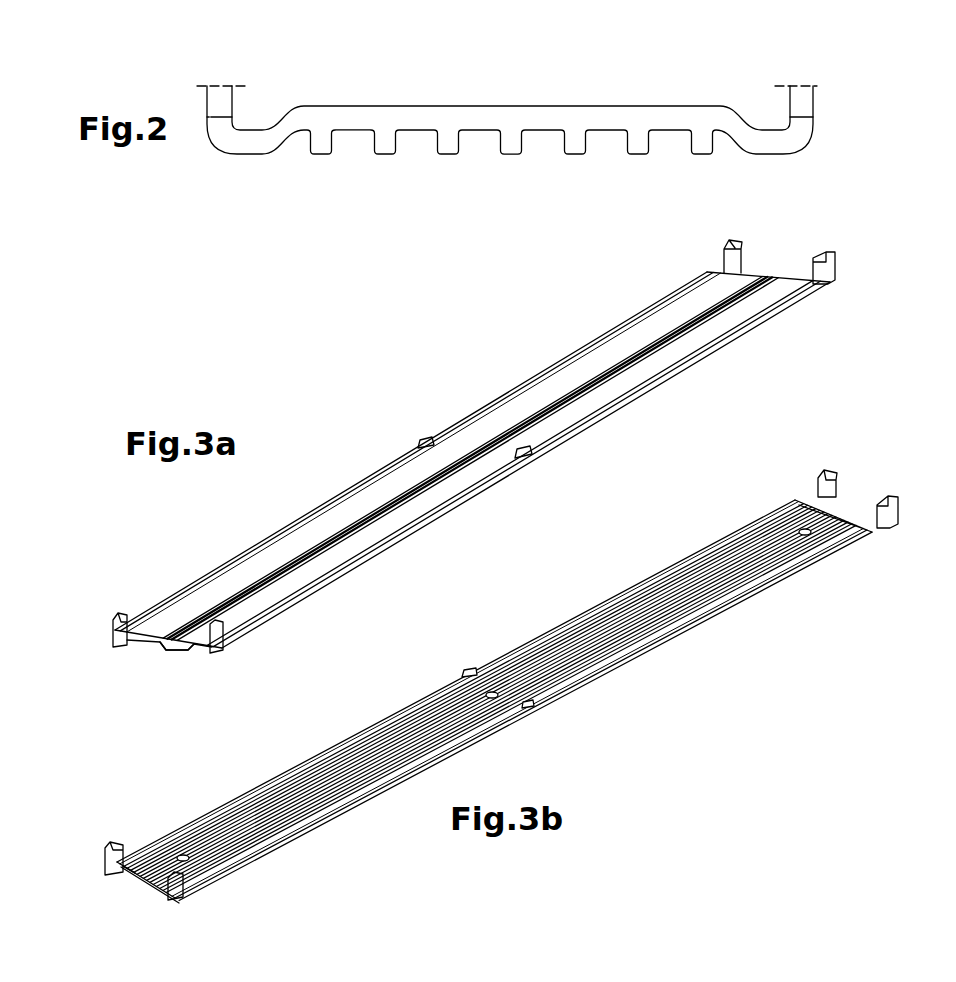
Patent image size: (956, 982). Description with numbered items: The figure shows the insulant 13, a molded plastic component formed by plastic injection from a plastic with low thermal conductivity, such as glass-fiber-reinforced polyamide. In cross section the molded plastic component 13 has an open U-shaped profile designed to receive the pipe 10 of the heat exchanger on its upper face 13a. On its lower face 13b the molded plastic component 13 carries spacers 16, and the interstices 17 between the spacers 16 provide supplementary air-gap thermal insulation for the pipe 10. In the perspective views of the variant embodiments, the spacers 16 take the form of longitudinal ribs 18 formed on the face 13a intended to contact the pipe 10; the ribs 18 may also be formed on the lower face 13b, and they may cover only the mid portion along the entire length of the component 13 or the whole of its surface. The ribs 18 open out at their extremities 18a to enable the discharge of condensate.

In FIG. 2, the pipe 10 is at (531, 6).
In FIG. 2, the insulant 13 is at (289, 70).
In FIG. 3a, the insulant 13 is at (462, 384).
In FIG. 3b, the insulant 13 is at (549, 604).
In FIG. 2, the upper face 13a is at (612, 105).
In FIG. 3a, the upper face 13a is at (553, 384).
In FIG. 2, the lower face 13b is at (300, 150).
In FIG. 2, the spacers 16 is at (502, 158).
In FIG. 2, the interstices 17 is at (425, 133).
In FIG. 3a, the longitudinal ribs 18 is at (172, 637).
In FIG. 3b, the longitudinal ribs 18 is at (334, 744).
In FIG. 3a, the extremities 18a is at (170, 653).
In FIG. 3b, the extremities 18a is at (121, 875).